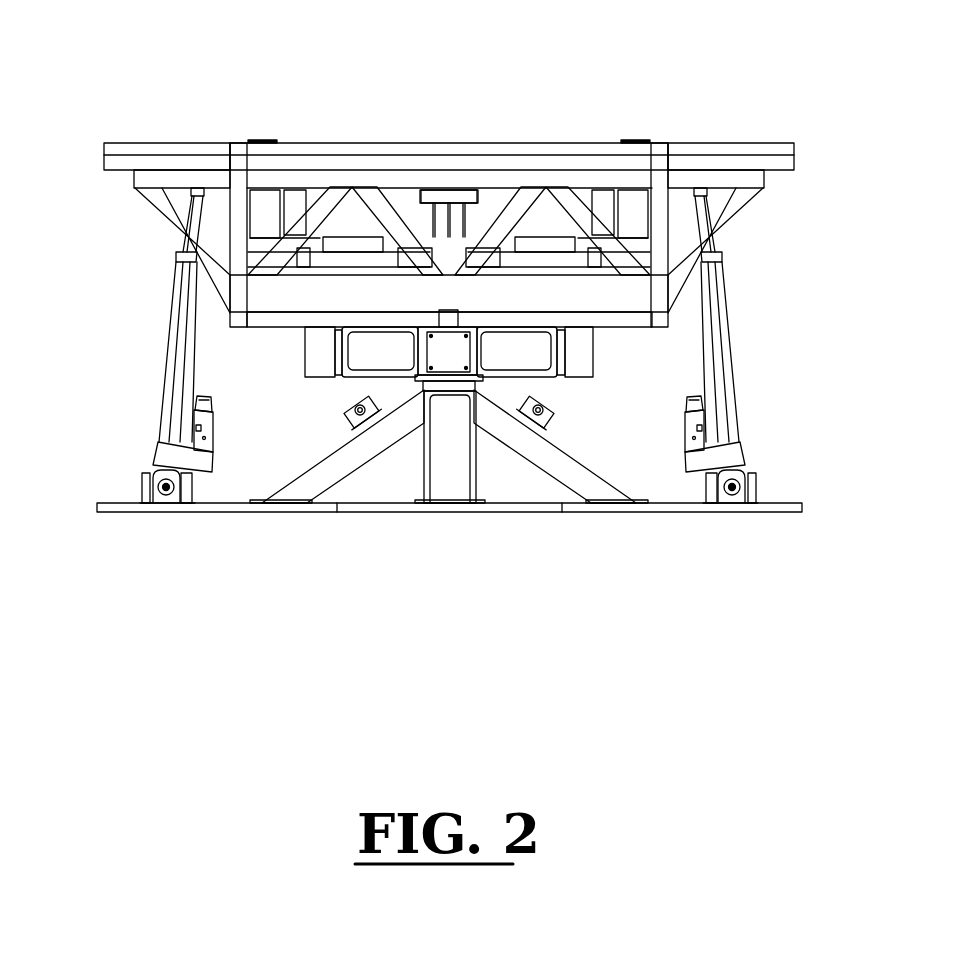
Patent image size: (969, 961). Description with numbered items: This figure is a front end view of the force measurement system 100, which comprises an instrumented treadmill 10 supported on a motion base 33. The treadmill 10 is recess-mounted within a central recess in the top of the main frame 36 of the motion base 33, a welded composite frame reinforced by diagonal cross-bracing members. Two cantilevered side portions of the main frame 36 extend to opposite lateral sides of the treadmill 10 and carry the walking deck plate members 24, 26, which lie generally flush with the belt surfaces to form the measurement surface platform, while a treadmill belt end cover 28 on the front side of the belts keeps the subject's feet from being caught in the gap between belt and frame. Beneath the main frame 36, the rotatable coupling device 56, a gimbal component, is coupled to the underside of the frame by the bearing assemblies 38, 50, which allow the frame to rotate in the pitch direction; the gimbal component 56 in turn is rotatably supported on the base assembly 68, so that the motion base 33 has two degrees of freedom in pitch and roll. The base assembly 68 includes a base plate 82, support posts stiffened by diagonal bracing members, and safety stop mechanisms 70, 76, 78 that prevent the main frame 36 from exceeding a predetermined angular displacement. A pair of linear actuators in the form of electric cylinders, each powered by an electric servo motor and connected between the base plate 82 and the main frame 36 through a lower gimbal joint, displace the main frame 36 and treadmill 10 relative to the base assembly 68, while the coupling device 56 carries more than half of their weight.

The instrumented treadmill 10 is at (492, 203).
The walking deck plate member 24 is at (702, 148).
The walking deck plate member 26 is at (155, 142).
The treadmill belt end cover 28 is at (360, 142).
The motion base 33 is at (130, 294).
The main frame 36 is at (662, 237).
The bearing assembly 38 is at (584, 353).
The bearing assembly 50 is at (309, 348).
The rotatable coupling device 56 is at (370, 353).
The base assembly 68 is at (690, 526).
The safety stop mechanism 70 is at (462, 485).
The safety stop mechanism 76 is at (364, 407).
The safety stop mechanism 78 is at (540, 410).
The base plate 82 is at (335, 512).
The force measurement system 100 is at (180, 556).